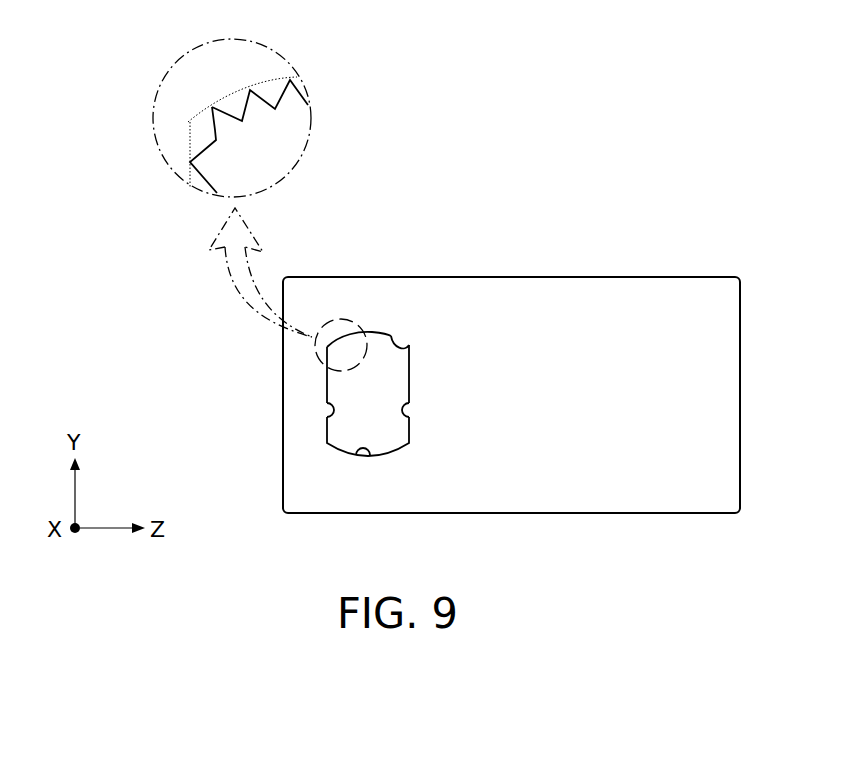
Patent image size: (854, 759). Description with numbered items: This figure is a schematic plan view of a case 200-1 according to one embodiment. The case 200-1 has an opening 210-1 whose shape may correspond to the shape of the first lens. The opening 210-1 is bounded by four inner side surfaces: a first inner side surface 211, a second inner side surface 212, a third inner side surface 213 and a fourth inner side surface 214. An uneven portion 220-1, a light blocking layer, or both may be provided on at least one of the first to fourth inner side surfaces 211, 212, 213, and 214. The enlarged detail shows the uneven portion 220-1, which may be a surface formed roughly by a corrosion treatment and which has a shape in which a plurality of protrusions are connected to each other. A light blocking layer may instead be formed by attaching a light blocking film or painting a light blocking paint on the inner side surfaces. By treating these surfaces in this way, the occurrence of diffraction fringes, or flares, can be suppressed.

The case 200-1 is at (538, 311).
The opening 210-1 is at (393, 374).
The second inner side surface 212 is at (401, 347).
The fourth inner side surface 214 is at (327, 411).
The third inner side surface 213 is at (411, 416).
The first inner side surface 211 is at (371, 457).
The uneven portion 220-1 is at (215, 130).